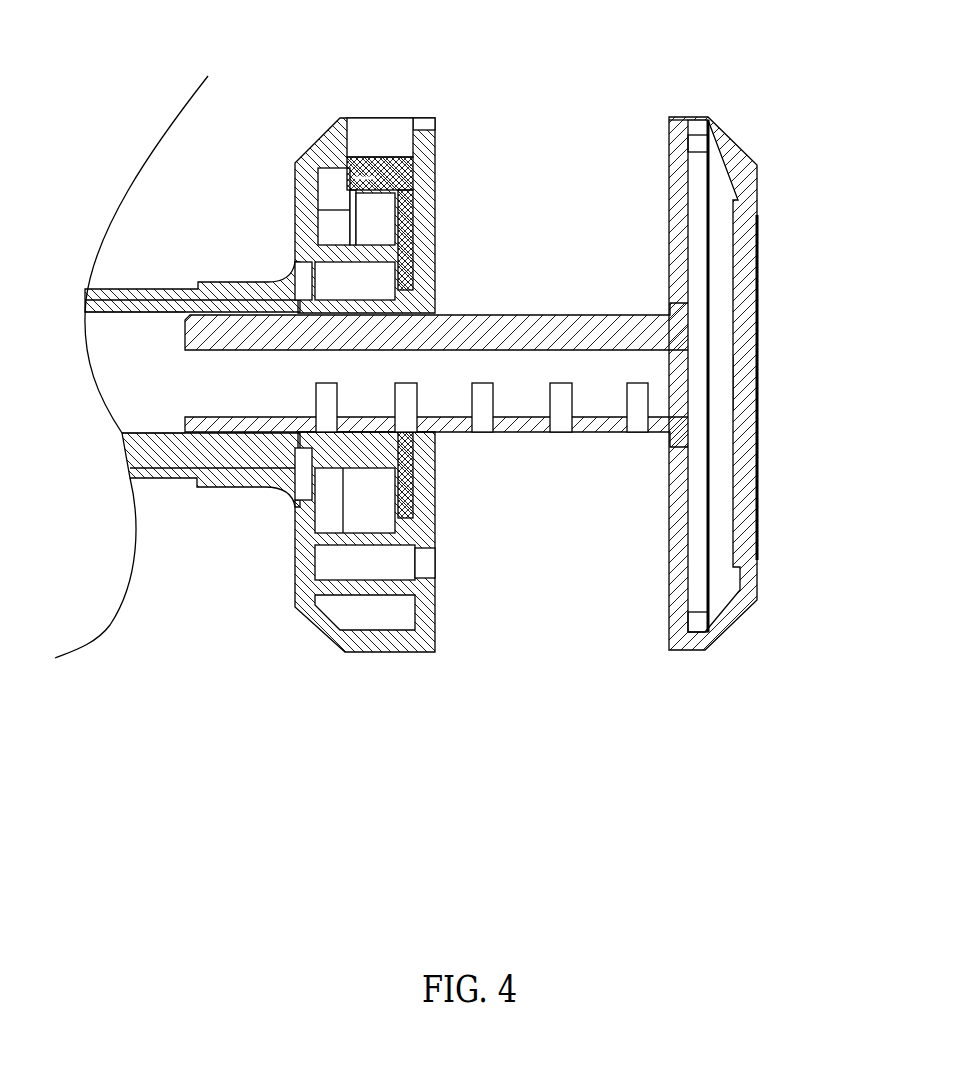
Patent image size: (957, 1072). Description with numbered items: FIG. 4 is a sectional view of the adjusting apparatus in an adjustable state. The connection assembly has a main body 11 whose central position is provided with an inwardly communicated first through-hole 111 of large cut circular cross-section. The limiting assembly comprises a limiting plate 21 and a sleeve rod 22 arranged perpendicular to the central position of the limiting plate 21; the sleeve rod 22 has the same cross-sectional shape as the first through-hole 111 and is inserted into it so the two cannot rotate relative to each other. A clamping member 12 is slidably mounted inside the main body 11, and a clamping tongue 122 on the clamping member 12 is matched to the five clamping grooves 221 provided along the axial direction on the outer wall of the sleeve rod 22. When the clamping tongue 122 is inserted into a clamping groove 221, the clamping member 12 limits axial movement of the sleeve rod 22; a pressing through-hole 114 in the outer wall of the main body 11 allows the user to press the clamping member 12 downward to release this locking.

The main body 11 is at (314, 628).
The first through-hole 111 is at (158, 353).
The pressing through-hole 114 is at (376, 133).
The clamping member 12 is at (413, 204).
The clamping tongue 122 is at (397, 462).
The limiting plate 21 is at (758, 388).
The sleeve rod 22 is at (457, 334).
The clamping grooves 221 is at (482, 431).